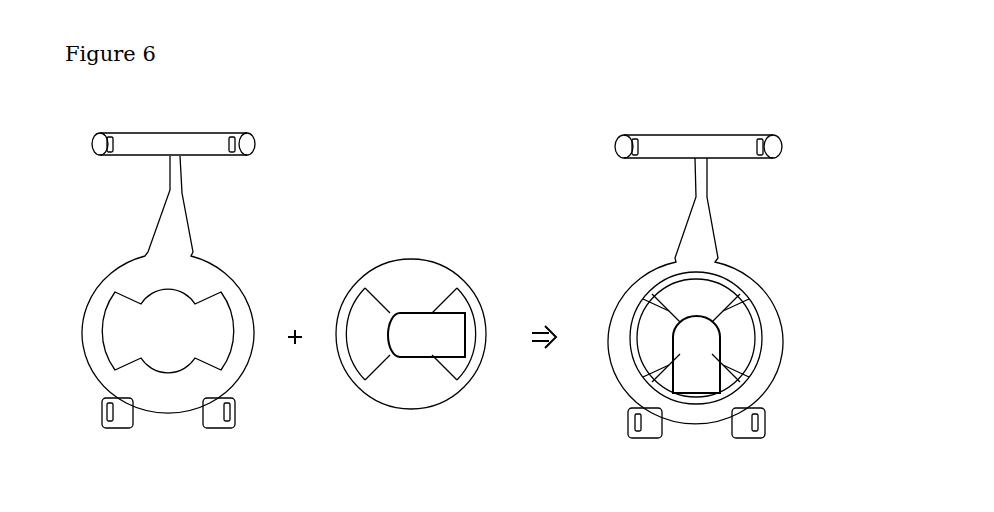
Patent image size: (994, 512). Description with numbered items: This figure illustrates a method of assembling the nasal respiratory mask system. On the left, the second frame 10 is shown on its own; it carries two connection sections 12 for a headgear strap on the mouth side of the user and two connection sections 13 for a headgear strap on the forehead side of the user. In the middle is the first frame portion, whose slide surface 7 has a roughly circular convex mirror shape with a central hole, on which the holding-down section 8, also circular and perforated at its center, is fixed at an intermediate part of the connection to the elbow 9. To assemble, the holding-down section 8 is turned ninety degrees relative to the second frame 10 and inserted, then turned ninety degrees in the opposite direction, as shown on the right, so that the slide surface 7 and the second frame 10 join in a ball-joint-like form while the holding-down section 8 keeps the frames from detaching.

The slide surface 7 is at (425, 285).
The holding-down section 8 is at (460, 370).
The elbow 9 is at (415, 337).
The second frame 10 is at (208, 272).
The connection sections for a headgear strap 12 is at (230, 422).
The connection sections for a headgear strap 13 is at (233, 142).